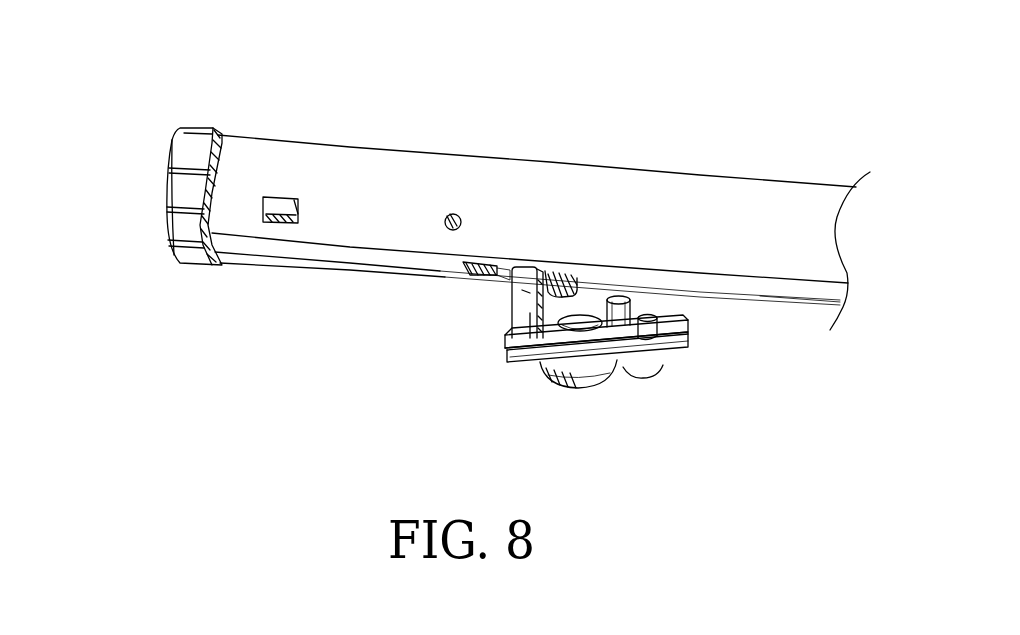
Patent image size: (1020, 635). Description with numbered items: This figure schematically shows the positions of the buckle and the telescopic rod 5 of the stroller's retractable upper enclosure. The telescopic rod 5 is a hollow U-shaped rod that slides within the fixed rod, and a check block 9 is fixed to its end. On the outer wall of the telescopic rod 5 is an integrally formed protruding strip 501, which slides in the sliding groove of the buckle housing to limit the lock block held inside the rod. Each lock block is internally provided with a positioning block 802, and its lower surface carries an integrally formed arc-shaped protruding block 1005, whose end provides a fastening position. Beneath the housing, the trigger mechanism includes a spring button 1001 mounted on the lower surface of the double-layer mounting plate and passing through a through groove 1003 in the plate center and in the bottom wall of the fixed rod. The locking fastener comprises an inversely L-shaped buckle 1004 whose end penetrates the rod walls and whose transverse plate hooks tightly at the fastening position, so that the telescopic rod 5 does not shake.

The telescopic rod 5 is at (355, 165).
The check block 9 is at (172, 148).
The protruding strip 501 is at (787, 287).
The positioning block 802 is at (557, 287).
The spring button 1001 is at (580, 383).
The through groove 1003 is at (582, 318).
The inversely L-shaped buckle 1004 is at (530, 292).
The arc-shaped protruding block 1005 is at (467, 262).